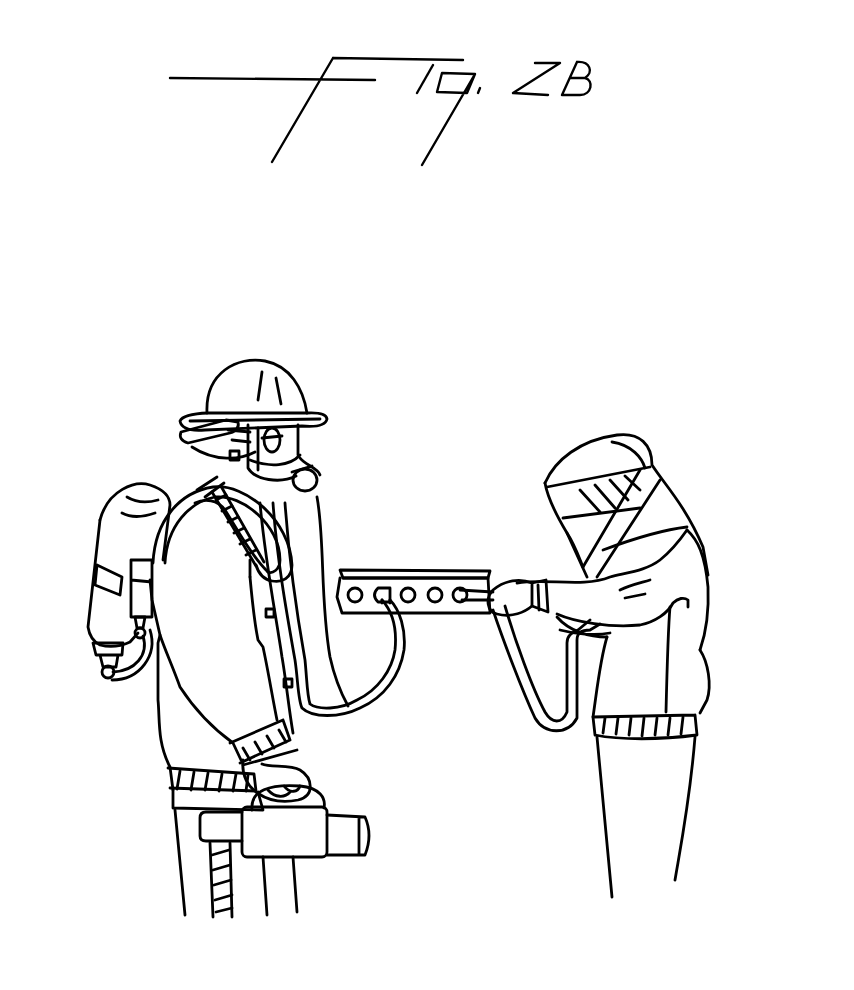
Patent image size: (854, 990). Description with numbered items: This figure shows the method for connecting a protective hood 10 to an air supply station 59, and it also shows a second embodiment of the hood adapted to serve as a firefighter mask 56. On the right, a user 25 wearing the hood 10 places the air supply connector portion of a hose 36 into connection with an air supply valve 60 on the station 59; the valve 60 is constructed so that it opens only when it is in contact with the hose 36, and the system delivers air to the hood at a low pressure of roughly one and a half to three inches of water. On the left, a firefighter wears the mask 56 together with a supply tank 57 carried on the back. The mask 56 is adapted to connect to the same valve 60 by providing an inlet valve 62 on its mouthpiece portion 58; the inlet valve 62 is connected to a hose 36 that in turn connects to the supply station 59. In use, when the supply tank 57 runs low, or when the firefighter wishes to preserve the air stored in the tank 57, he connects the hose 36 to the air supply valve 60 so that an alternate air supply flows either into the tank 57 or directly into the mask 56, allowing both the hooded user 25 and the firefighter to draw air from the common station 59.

The hood 10 is at (662, 445).
The user 25 is at (707, 683).
The hose 36 is at (402, 663).
The firefighter mask 56 is at (180, 427).
The supply tank 57 is at (120, 542).
The mouthpiece portion 58 is at (348, 706).
The air supply station 59 is at (418, 583).
The air supply valve 60 is at (432, 597).
The inlet valve 62 is at (264, 425).